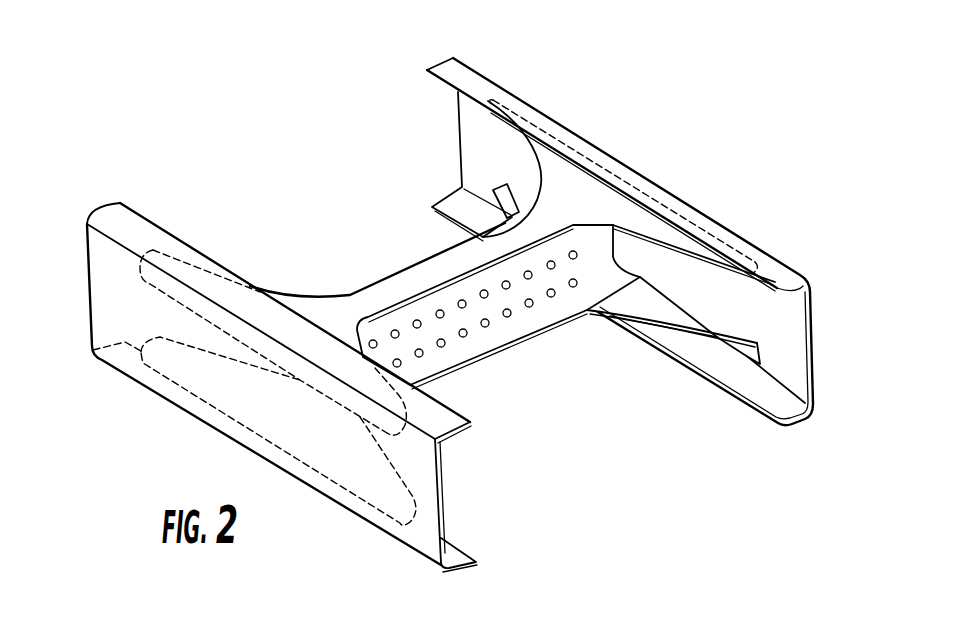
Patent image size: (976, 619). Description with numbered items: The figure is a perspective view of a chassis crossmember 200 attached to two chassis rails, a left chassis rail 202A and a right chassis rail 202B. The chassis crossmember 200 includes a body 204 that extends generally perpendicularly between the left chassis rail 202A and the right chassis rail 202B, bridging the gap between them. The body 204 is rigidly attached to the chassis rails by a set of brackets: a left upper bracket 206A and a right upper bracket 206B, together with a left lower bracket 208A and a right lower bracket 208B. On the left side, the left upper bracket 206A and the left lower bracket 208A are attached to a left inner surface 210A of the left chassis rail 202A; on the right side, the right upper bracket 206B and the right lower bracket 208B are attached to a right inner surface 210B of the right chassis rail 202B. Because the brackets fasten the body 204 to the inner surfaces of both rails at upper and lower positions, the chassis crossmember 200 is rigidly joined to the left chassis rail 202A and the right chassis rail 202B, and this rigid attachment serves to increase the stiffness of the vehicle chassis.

The chassis crossmember 200 is at (415, 261).
The left chassis rail 202A is at (104, 210).
The right chassis rail 202B is at (482, 72).
The body 204 is at (517, 342).
The left upper bracket 206A is at (198, 275).
The right upper bracket 206B is at (547, 133).
The left lower bracket 208A is at (170, 378).
The right lower bracket 208B is at (740, 336).
The left inner surface 210A is at (444, 492).
The right inner surface 210B is at (797, 367).